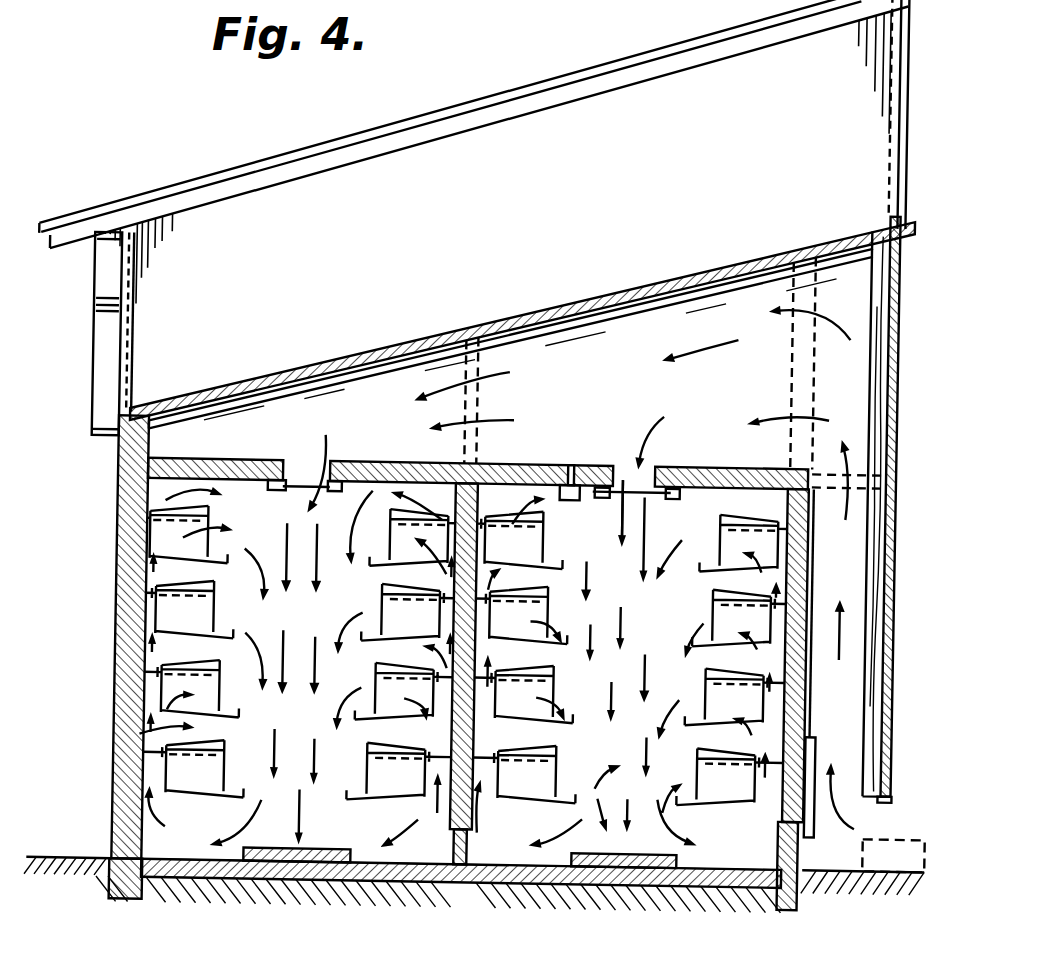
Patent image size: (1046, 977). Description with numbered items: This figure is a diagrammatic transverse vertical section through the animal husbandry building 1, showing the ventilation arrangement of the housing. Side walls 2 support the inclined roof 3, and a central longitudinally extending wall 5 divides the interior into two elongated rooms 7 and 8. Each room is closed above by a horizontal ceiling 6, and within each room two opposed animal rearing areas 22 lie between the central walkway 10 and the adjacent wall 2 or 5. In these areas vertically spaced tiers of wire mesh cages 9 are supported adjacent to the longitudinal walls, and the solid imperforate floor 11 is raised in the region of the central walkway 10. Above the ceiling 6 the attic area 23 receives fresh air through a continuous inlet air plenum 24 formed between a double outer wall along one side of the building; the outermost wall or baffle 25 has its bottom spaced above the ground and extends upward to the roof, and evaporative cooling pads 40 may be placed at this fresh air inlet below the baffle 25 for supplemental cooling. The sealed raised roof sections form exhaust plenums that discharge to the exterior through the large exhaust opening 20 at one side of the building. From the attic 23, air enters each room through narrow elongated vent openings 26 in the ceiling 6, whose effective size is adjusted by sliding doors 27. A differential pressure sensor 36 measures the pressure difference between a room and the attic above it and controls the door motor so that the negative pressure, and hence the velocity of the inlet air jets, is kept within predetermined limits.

The building 1 is at (112, 719).
The wall 2 is at (115, 639).
The inclined roof 3 is at (522, 313).
The central longitudinally extending wall 5 is at (476, 738).
The horizontal ceiling 6 is at (365, 488).
The room 7 is at (128, 760).
The room 8 is at (600, 772).
The cages 9 is at (229, 710).
The central walkway 10 is at (308, 836).
The floor 11 is at (408, 857).
The exhaust opening 20 is at (96, 389).
The animal rearing area 22 is at (200, 816).
The attic area 23 is at (665, 335).
The inlet air plenum 24 is at (862, 665).
The outermost wall or baffle 25 is at (893, 745).
The inlet vent opening 26 is at (620, 476).
The door 27 is at (643, 491).
The differential pressure sensor 36 is at (570, 499).
The evaporative cooling pads 40 is at (845, 885).